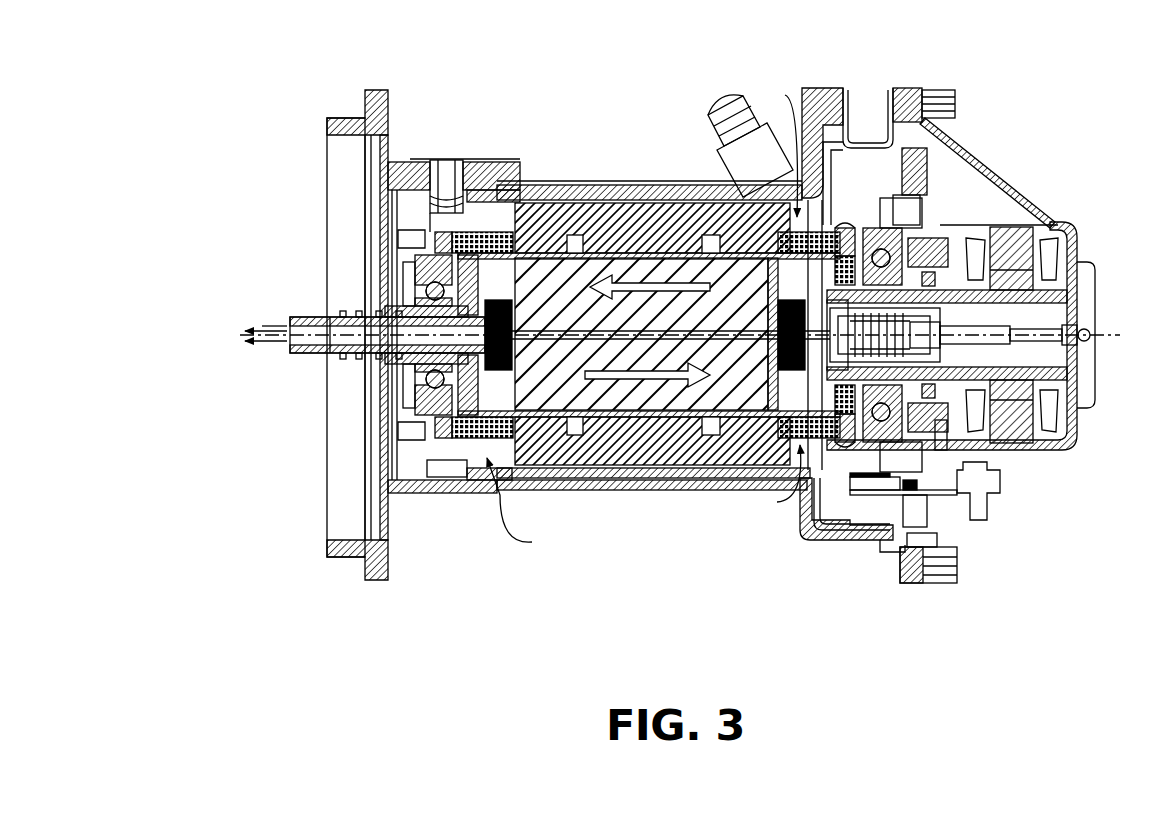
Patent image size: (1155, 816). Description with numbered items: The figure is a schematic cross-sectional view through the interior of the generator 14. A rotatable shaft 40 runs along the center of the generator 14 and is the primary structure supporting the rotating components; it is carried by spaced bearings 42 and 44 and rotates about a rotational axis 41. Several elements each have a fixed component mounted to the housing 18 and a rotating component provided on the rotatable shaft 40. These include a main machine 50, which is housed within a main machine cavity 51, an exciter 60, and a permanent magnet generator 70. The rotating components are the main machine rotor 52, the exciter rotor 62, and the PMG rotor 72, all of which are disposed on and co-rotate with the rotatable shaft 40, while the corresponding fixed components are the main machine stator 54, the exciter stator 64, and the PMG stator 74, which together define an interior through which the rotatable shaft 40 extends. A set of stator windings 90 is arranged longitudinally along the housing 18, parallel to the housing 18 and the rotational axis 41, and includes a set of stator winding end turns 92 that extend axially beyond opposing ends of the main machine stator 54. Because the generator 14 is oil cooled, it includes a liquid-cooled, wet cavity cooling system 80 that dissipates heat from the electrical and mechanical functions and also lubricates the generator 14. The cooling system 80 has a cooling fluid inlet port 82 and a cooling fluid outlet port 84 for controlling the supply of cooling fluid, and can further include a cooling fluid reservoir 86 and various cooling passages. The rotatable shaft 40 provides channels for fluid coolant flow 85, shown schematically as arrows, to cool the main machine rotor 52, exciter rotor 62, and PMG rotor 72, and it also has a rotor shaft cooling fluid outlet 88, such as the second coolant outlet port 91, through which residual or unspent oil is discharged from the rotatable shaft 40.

The generator 14 is at (520, 98).
The housing 18 is at (533, 183).
The rotatable shaft 40 is at (347, 368).
The rotational axis 41 is at (1095, 340).
The bearing 42 is at (437, 382).
The bearing 44 is at (868, 448).
The main machine 50 is at (592, 148).
The main machine cavity 51 is at (502, 175).
The main machine rotor 52 is at (543, 400).
The main machine stator 54 is at (585, 400).
The exciter 60 is at (1013, 220).
The exciter rotor 62 is at (1013, 400).
The exciter stator 64 is at (1017, 434).
The permanent magnet generator 70 is at (952, 222).
The PMG rotor 72 is at (928, 432).
The PMG stator 74 is at (948, 430).
The cooling system 80 is at (487, 190).
The cooling fluid inlet port 82 is at (720, 107).
The cooling fluid outlet port 84 is at (447, 182).
The fluid coolant flow 85 is at (615, 373).
The cooling fluid reservoir 86 is at (812, 530).
The rotor shaft cooling fluid outlet 88 is at (280, 328).
The set of stator windings 90 is at (720, 243).
The second coolant outlet port 91 is at (278, 322).
The set of stator winding end turns 92 is at (644, 317).